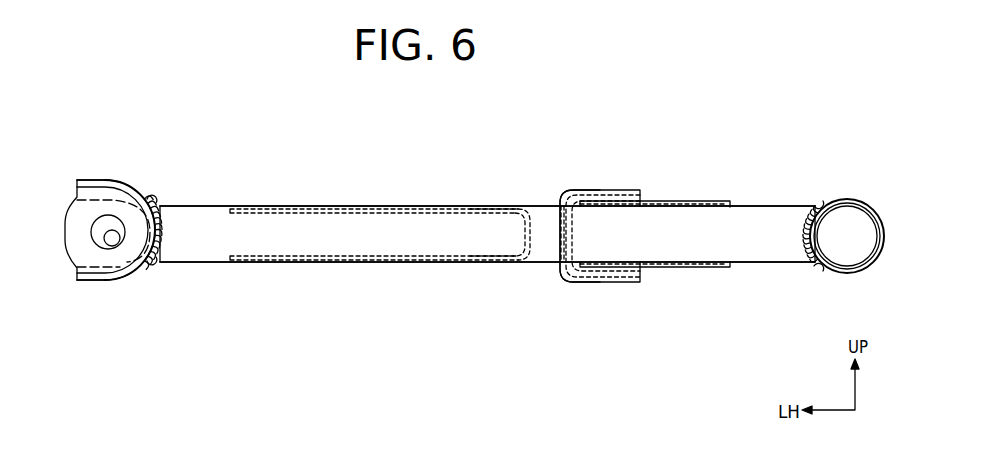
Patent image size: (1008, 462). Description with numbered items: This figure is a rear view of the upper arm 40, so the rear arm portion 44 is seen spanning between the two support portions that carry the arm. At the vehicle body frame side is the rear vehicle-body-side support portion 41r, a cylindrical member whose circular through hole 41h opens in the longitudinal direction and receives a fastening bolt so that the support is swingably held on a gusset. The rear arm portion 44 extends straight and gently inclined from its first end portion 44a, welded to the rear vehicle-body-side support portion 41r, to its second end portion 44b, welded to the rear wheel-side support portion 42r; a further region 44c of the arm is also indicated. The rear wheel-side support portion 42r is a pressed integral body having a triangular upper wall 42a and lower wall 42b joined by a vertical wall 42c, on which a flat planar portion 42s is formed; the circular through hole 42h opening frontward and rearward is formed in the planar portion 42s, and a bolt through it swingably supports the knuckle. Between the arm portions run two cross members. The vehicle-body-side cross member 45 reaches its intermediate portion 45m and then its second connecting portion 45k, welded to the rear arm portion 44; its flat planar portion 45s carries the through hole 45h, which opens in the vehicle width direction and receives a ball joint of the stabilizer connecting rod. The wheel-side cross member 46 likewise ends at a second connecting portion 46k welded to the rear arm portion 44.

The upper arm 40 is at (828, 98).
The rear vehicle-body-side support portion 41r is at (848, 200).
The through hole 41h is at (845, 240).
The rear wheel-side support portion 42r is at (192, 110).
The upper wall 42a is at (100, 179).
The lower wall 42b is at (82, 286).
The vertical wall 42c is at (150, 233).
The through hole 42h is at (108, 238).
The planar portion 42s is at (85, 240).
The rear arm portion 44 is at (757, 212).
The first end portion 44a is at (783, 207).
The second end portion 44b is at (178, 217).
The arm slot 44c is at (495, 232).
The vehicle-body-side cross member 45 is at (648, 204).
The second connecting portion 45k is at (690, 202).
The intermediate portion 45m is at (598, 190).
The planar portion 45s is at (558, 210).
The through hole 45h is at (552, 233).
The wheel-side cross member 46 is at (455, 197).
The second connecting portion 46k is at (447, 207).